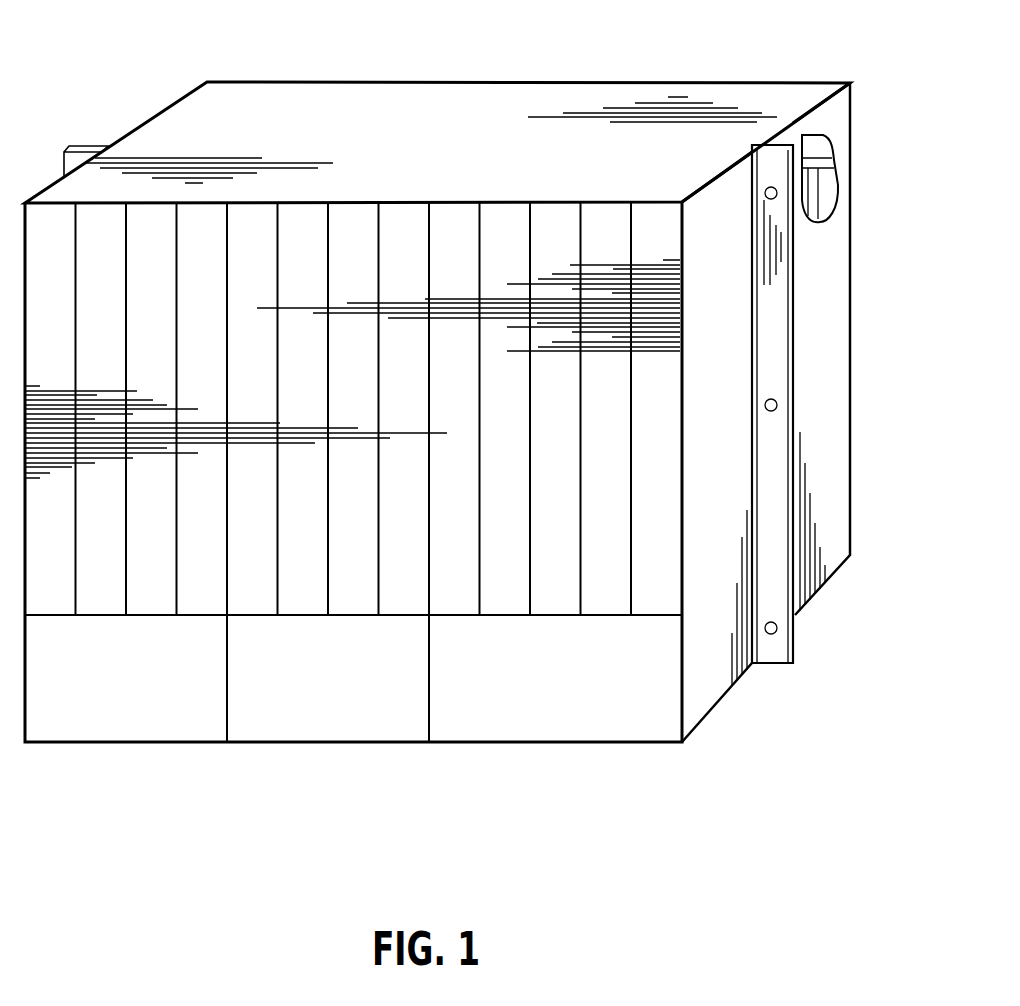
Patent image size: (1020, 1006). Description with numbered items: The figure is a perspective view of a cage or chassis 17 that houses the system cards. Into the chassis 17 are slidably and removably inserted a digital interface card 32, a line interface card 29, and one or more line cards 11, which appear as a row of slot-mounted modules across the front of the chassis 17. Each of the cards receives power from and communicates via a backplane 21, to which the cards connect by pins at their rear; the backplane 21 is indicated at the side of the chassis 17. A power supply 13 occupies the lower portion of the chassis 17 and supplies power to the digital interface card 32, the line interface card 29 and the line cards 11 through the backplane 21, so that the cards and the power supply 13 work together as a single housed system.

The line card 11 is at (550, 600).
The power supply 13 is at (166, 732).
The chassis 17 is at (602, 88).
The backplane 21 is at (837, 190).
The line interface card 29 is at (205, 605).
The digital interface card 32 is at (150, 605).